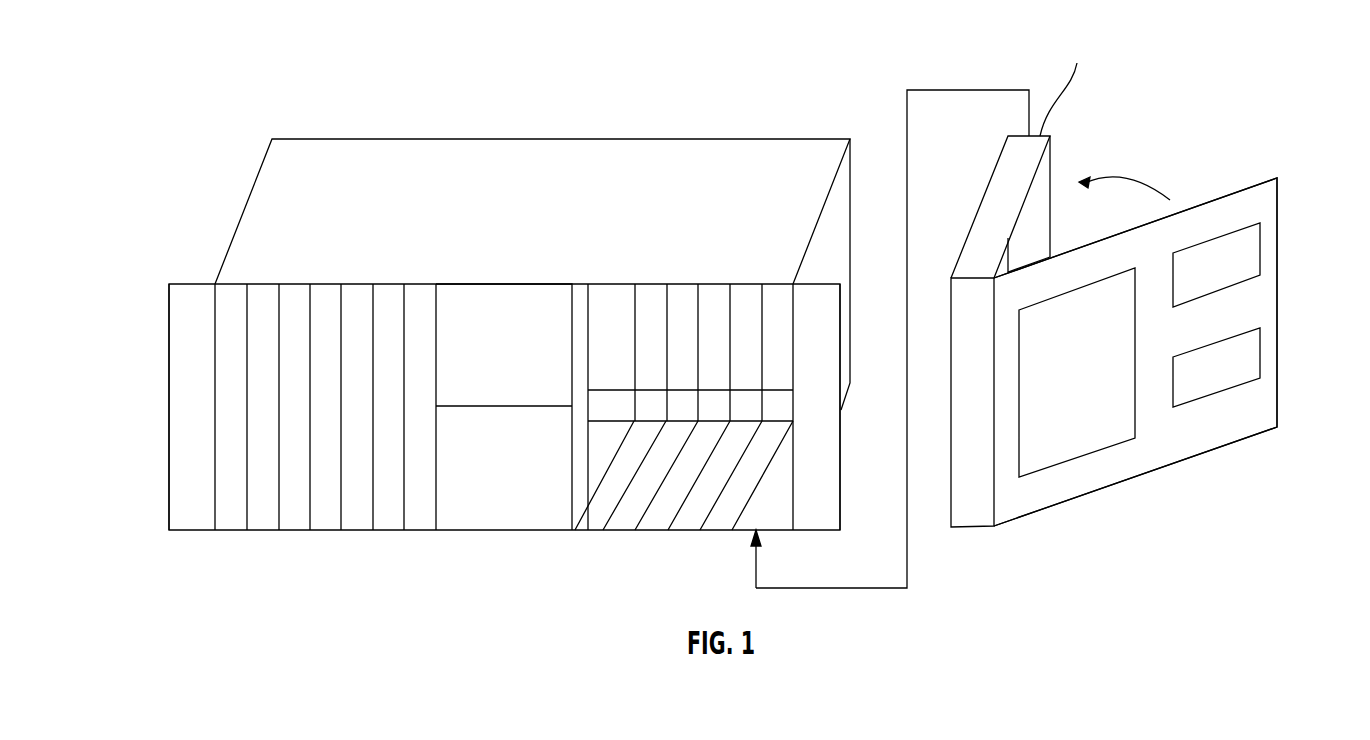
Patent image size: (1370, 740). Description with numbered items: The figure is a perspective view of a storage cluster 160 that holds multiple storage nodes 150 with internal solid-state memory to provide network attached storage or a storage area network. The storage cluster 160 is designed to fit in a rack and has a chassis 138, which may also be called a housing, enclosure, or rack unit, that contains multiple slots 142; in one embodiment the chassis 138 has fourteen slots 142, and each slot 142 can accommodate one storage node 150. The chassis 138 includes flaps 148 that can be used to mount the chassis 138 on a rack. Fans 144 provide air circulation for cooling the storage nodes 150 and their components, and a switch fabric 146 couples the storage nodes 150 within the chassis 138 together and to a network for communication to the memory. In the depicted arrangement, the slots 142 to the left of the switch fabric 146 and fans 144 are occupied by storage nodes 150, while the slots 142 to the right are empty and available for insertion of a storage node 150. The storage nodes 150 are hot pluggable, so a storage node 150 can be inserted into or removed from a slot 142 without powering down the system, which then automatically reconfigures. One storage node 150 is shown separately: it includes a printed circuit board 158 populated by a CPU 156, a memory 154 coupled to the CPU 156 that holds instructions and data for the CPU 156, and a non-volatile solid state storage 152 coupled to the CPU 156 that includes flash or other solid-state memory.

The chassis 138 is at (338, 139).
The slot 142 is at (740, 532).
The fans 144 is at (507, 532).
The switch fabric 146 is at (505, 283).
The flaps 148 is at (169, 408).
The storage node 150 is at (229, 532).
The non-volatile solid state storage 152 is at (1077, 462).
The memory 154 is at (1217, 238).
The CPU 156 is at (1260, 352).
The printed circuit board 158 is at (1278, 218).
The storage cluster 160 is at (313, 92).